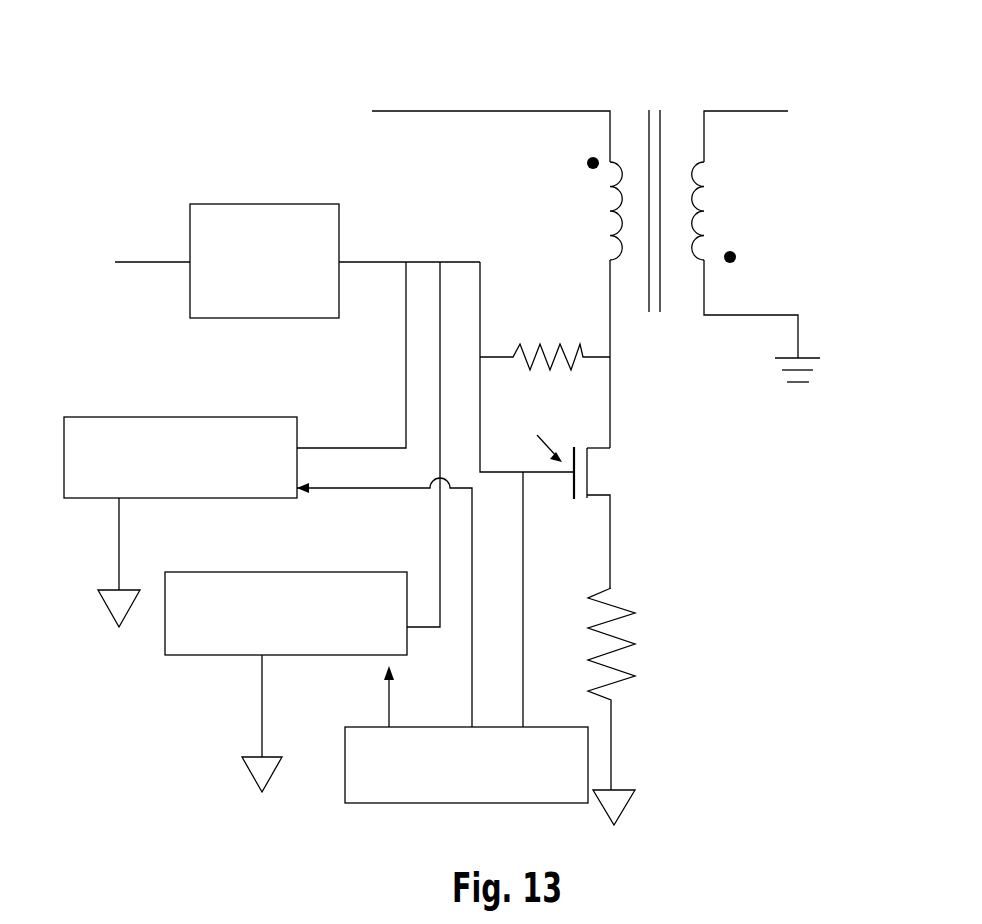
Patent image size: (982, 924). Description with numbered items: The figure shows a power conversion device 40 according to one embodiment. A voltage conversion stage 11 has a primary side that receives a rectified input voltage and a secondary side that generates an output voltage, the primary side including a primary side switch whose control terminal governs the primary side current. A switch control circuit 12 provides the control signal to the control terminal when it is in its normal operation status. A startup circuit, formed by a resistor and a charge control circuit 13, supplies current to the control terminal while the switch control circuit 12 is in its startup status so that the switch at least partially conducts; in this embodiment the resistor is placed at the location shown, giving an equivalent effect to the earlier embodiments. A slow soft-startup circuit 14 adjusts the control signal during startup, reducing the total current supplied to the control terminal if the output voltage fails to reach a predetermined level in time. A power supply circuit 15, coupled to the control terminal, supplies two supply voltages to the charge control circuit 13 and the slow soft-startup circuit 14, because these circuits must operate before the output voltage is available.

The power conversion device 40 is at (228, 52).
The voltage conversion stage 11 is at (672, 102).
The switch control circuit 12 is at (320, 310).
The charge control circuit 13 is at (232, 488).
The slow soft-startup circuit 14 is at (340, 643).
The power supply circuit 15 is at (452, 793).